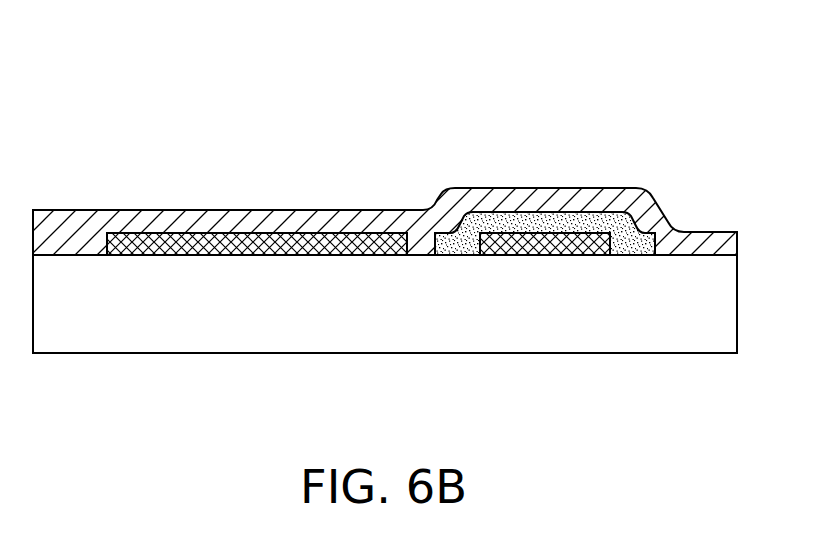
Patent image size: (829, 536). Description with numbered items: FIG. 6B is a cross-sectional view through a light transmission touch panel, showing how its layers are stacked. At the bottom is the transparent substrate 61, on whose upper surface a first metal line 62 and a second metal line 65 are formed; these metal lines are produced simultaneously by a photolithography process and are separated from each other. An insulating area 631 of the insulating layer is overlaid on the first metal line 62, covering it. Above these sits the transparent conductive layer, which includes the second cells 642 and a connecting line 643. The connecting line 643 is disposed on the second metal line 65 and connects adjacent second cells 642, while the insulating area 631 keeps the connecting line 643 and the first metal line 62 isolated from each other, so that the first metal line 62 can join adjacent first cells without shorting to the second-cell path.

The transparent substrate 61 is at (720, 303).
The first metal line 62 is at (550, 252).
The second metal line 65 is at (250, 243).
The insulating area 631 is at (568, 218).
The second cell 642 is at (71, 238).
The connecting line 643 is at (280, 220).